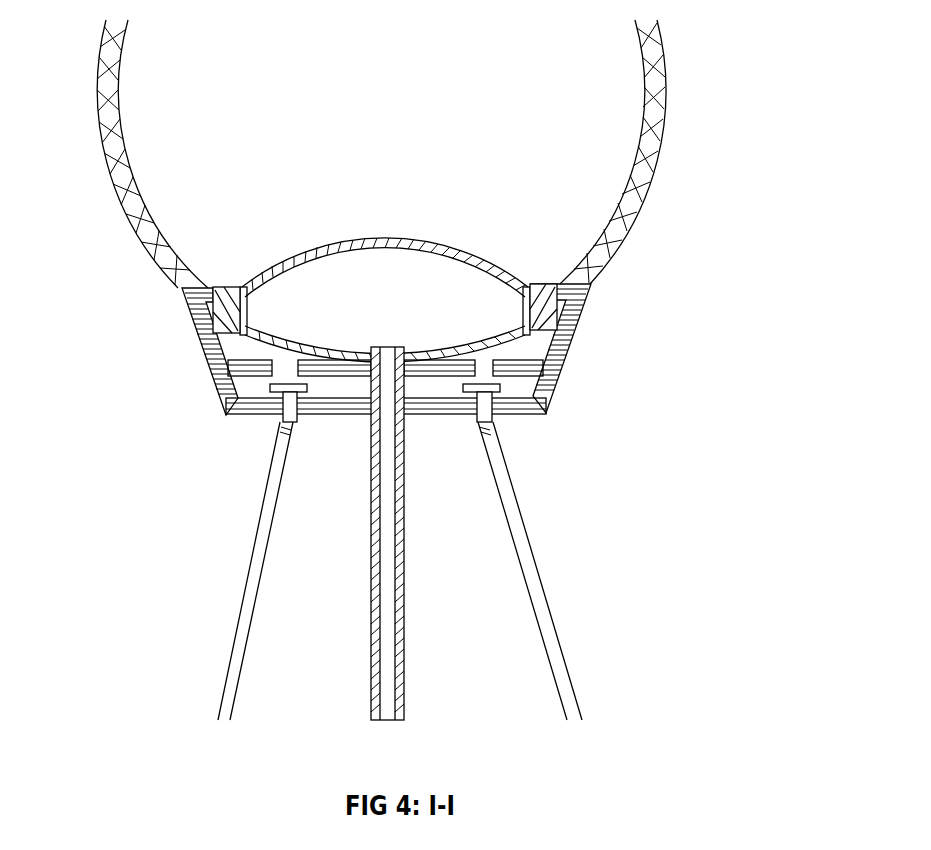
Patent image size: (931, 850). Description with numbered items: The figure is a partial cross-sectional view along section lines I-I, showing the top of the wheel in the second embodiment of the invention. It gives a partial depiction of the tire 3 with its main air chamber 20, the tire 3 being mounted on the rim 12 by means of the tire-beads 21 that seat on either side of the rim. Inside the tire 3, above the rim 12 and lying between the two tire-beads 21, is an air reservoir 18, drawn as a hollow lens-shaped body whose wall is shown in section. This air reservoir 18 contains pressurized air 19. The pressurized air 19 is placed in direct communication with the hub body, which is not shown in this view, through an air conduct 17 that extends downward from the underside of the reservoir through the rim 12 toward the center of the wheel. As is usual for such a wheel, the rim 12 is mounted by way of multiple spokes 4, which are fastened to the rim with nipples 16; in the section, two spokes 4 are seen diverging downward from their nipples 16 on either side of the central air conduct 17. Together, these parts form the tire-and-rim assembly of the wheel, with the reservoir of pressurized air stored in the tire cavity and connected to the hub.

The tire 3 is at (145, 222).
The main air chamber 20 is at (500, 122).
The air reservoir 18 is at (490, 255).
The pressurized air 19 is at (453, 321).
The rim 12 is at (582, 313).
The tire-beads 21 is at (213, 327).
The nipples 16 is at (278, 424).
The air conduct 17 is at (405, 463).
The spokes 4 is at (252, 577).